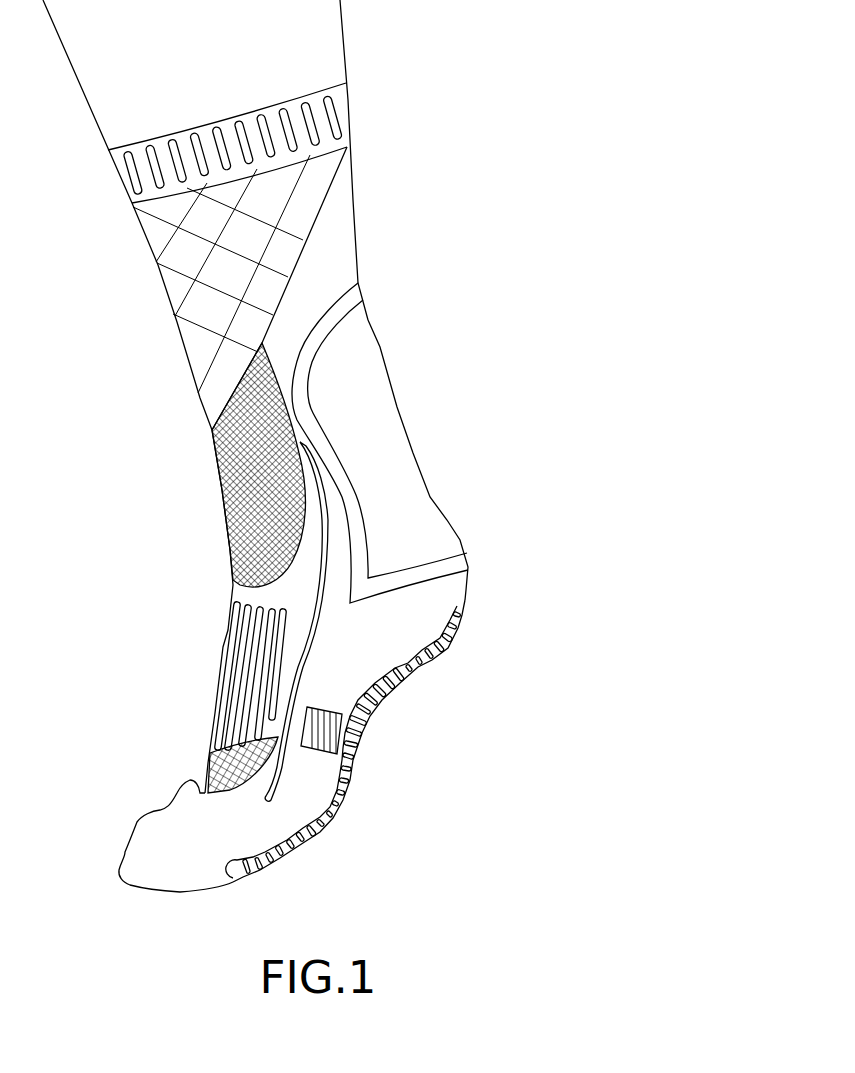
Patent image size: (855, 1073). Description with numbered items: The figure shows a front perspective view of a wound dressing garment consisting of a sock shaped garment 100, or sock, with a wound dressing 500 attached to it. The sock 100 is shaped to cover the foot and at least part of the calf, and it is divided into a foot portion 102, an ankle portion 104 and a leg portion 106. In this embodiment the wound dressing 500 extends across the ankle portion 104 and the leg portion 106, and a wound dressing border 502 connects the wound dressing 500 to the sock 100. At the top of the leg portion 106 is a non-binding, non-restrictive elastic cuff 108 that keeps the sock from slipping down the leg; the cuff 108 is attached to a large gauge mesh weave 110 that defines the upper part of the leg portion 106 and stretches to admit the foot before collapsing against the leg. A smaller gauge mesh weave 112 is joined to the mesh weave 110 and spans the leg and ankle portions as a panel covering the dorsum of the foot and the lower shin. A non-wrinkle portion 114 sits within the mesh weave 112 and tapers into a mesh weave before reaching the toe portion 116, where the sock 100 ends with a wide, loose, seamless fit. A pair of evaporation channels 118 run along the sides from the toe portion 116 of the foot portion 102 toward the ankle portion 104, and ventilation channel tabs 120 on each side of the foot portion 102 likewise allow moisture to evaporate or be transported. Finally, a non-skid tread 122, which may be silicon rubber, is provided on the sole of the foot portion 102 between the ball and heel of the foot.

The sock shaped garment 100 is at (262, 108).
The foot portion 102 is at (403, 788).
The ankle portion 104 is at (498, 442).
The leg portion 106 is at (403, 201).
The elastic cuff 108 is at (336, 147).
The large gauge mesh weave 110 is at (176, 322).
The smaller gauge mesh weave 112 is at (228, 510).
The non-wrinkle portion 114 is at (222, 683).
The toe portion 116 is at (131, 873).
The evaporation channel 118 is at (305, 634).
The ventilation channel tab 120 is at (320, 754).
The non-skid tread 122 is at (428, 660).
The wound dressing 500 is at (410, 391).
The wound dressing border 502 is at (361, 290).